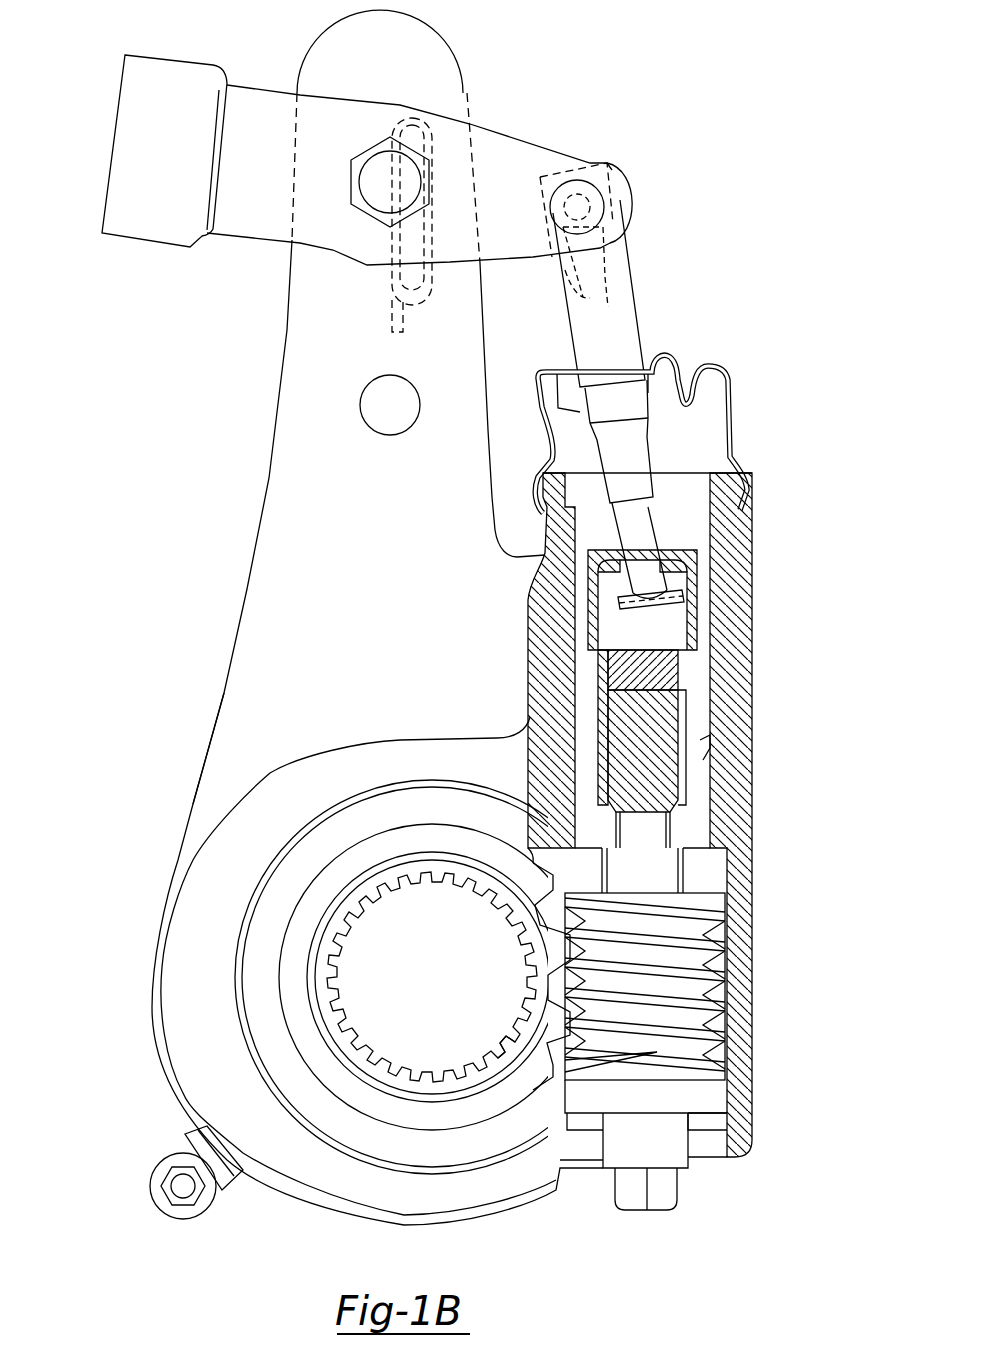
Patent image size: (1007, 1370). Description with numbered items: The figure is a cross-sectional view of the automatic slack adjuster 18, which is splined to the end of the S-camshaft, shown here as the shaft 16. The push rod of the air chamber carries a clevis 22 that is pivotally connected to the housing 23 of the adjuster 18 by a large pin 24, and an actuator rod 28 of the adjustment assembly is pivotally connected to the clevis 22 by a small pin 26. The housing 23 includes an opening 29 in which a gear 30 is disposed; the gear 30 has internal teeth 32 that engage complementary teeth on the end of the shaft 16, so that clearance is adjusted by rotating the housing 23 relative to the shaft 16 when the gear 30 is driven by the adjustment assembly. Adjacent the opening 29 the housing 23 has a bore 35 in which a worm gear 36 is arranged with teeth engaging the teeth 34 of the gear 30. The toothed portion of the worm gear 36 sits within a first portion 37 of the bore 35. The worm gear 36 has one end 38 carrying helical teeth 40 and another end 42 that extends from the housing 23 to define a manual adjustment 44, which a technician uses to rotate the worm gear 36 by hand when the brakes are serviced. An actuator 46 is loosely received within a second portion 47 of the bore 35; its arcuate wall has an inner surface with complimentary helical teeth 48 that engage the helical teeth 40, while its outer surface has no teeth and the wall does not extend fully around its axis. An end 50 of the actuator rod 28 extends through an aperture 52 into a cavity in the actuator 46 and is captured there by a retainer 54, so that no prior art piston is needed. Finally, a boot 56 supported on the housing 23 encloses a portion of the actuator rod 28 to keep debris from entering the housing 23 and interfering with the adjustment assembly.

The shaft 16 is at (437, 995).
The slack adjuster 18 is at (205, 585).
The clevis 22 is at (505, 152).
The housing 23 is at (250, 695).
The large pin 24 is at (378, 160).
The small pin 26 is at (580, 206).
The actuator rod 28 is at (622, 296).
The opening 29 is at (410, 910).
The gear 30 is at (492, 882).
The internal teeth 32 is at (378, 894).
The teeth 34 is at (547, 930).
The bore 35 is at (700, 835).
The worm gear 36 is at (706, 938).
The first portion 37 is at (700, 1074).
The one end 38 is at (700, 706).
The helical teeth 40 is at (666, 765).
The another end 42 is at (700, 1152).
The manual adjustment 44 is at (632, 1212).
The actuator 46 is at (692, 660).
The second portion 47 is at (712, 748).
The complimentary helical teeth 48 is at (647, 650).
The end 50 is at (645, 520).
The aperture 52 is at (655, 560).
The retainer 54 is at (620, 598).
The boot 56 is at (724, 405).